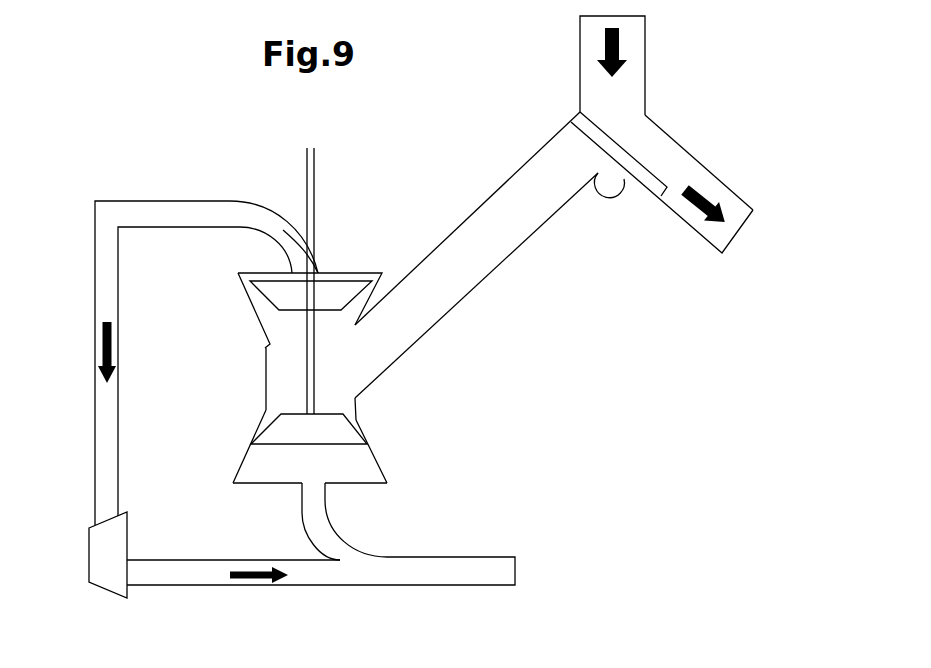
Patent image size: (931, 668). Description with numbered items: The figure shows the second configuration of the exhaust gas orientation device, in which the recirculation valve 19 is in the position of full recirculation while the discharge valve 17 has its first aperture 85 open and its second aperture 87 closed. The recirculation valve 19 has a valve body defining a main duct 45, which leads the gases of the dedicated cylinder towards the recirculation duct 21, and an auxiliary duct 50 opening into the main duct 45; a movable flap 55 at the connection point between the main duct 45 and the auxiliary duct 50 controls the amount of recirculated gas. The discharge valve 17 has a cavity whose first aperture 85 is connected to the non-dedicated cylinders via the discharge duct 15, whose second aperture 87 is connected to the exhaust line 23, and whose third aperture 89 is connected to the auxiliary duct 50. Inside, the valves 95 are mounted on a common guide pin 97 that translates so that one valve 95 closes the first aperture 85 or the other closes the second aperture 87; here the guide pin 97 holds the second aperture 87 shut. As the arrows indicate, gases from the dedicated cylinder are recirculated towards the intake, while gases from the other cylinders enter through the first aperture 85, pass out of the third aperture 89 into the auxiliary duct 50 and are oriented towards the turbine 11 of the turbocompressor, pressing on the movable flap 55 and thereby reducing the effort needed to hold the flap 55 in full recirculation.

The turbine 11 is at (102, 548).
The discharge duct 15 is at (129, 216).
The discharge valve 17 is at (315, 378).
The recirculation valve 19 is at (703, 98).
The recirculation duct 21 is at (737, 212).
The exhaust line 23 is at (488, 572).
The main duct 45 is at (652, 137).
The auxiliary duct 50 is at (567, 150).
The movable flap 55 is at (618, 155).
The first aperture 85 is at (300, 272).
The second aperture 87 is at (313, 490).
The third aperture 89 is at (360, 353).
The valve 95 is at (277, 292).
The guide pin 97 is at (314, 182).